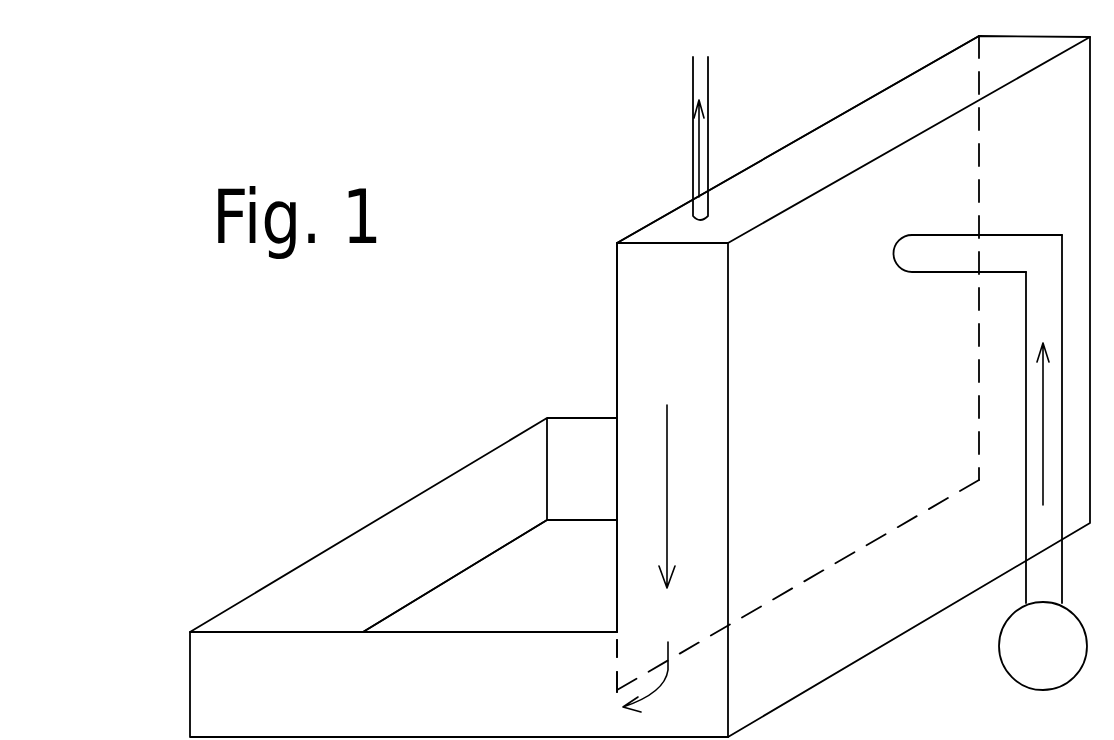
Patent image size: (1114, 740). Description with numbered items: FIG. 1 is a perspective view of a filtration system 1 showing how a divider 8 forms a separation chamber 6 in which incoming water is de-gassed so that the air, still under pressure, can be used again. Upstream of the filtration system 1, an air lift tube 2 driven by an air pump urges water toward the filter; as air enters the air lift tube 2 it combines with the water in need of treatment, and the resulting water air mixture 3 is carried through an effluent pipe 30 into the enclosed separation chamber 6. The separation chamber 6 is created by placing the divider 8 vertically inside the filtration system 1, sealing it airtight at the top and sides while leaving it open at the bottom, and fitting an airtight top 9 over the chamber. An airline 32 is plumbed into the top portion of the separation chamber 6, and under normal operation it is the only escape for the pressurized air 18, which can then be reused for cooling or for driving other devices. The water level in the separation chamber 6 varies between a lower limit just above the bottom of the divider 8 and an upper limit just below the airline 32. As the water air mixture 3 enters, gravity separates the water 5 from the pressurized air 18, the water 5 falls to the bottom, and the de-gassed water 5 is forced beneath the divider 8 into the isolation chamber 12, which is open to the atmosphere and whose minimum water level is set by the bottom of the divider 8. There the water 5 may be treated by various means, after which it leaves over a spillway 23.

The filtration system 1 is at (817, 413).
The air lift tube 2 is at (1025, 530).
The water air mixture 3 is at (1043, 407).
The water 5 is at (667, 497).
The separation chamber 6 is at (633, 353).
The divider 8 is at (613, 678).
The airtight top 9 is at (657, 220).
The isolation chamber 12 is at (517, 577).
The pressurized air 18 is at (697, 162).
The spillway 23 is at (402, 503).
The effluent pipe 30 is at (950, 234).
The airline 32 is at (708, 136).